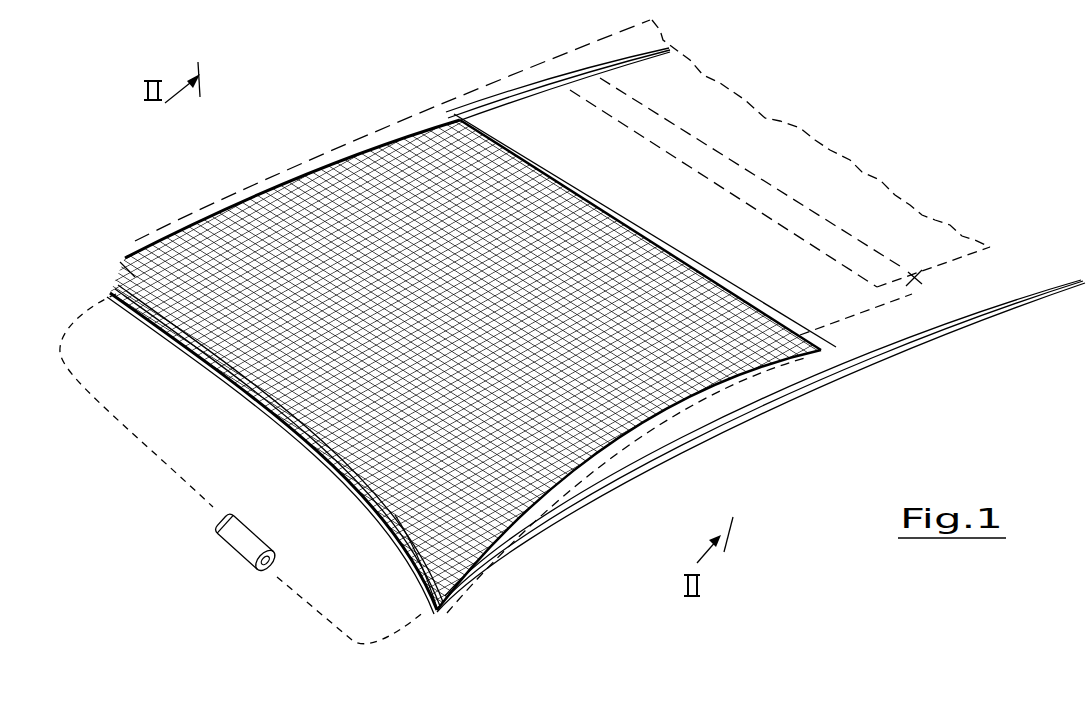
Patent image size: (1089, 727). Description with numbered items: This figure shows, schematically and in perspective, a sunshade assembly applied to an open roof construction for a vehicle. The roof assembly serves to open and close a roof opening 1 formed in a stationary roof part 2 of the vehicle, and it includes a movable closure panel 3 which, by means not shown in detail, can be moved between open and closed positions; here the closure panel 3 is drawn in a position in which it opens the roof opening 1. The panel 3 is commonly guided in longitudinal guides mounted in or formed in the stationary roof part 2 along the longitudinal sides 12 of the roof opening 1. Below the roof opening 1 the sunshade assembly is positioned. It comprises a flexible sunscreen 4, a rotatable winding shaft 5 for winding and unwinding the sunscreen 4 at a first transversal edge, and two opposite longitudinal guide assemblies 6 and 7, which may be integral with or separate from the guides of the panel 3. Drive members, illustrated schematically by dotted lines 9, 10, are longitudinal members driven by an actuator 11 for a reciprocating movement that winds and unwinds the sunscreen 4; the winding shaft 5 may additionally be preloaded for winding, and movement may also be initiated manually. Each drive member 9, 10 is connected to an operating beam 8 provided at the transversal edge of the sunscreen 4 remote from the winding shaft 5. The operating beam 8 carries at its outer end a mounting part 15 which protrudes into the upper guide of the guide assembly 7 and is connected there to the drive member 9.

The roof opening 1 is at (527, 128).
The stationary roof part 2 is at (394, 93).
The movable closure panel 3 is at (789, 130).
The flexible sunscreen 4 is at (345, 195).
The rotatable winding shaft 5 is at (262, 455).
The longitudinal guide assembly 6 is at (273, 193).
The longitudinal guide assembly 7 is at (787, 390).
The operating beam 8 is at (640, 232).
The drive member 9 is at (615, 470).
The drive member 10 is at (100, 298).
The actuator 11 is at (243, 550).
The longitudinal sides 12 is at (197, 207).
The mounting part 15 is at (372, 552).